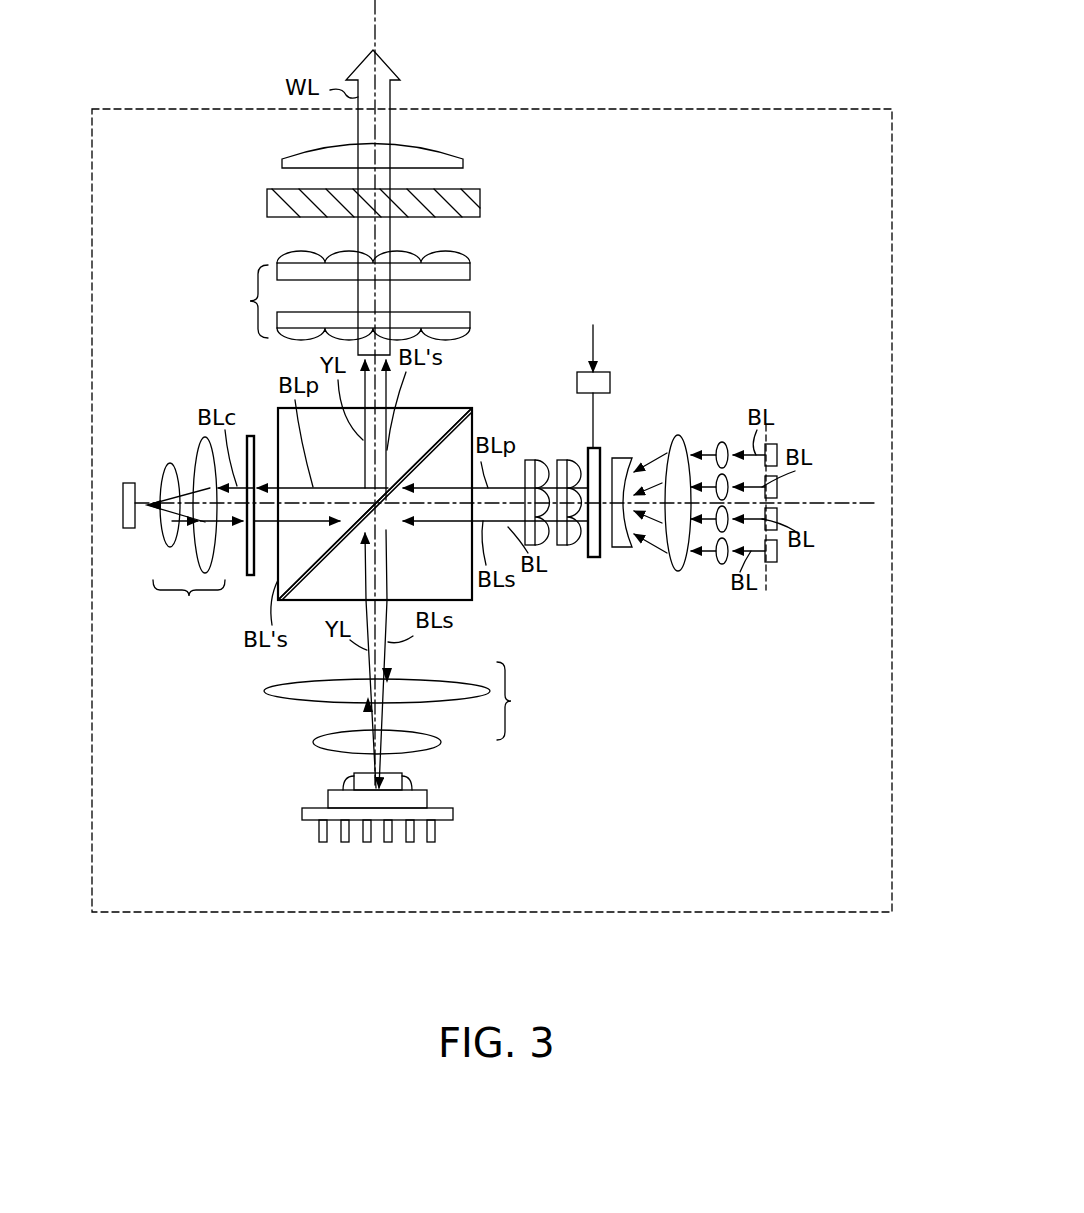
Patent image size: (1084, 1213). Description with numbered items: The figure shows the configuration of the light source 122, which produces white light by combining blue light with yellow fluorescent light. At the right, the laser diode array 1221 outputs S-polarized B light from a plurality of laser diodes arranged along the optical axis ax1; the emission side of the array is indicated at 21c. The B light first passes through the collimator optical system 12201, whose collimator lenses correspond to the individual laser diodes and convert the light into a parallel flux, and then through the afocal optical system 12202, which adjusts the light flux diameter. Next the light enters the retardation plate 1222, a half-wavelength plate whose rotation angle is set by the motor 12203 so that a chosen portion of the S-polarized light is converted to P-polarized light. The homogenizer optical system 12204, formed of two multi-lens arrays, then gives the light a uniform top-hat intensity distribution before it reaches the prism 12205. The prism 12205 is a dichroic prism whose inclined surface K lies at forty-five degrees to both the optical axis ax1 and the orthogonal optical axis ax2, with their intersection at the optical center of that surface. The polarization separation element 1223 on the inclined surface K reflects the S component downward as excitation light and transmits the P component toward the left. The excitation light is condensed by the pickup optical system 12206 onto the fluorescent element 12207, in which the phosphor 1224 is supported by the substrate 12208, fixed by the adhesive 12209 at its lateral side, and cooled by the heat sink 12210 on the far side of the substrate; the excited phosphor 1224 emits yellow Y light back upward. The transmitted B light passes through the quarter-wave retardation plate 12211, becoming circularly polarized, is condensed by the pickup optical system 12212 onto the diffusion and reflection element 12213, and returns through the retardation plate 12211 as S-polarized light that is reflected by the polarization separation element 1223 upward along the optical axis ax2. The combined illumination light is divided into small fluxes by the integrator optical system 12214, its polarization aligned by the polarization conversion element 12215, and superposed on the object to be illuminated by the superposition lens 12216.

The light source 122 is at (735, 109).
The laser diode (LD) array 1221 is at (772, 465).
The collimator optical system 12201 is at (735, 436).
The afocal optical system 12202 is at (614, 455).
The motor 12203 is at (577, 374).
The homogenizer optical system 12204 is at (535, 460).
The retardation plate 1222 is at (595, 558).
The polarization separation element 1223 is at (455, 412).
The inclined surface K is at (427, 447).
The prism 12205 is at (472, 600).
The pickup optical system 12206 is at (426, 708).
The fluorescent element 12207 is at (391, 797).
The phosphor 1224 is at (354, 778).
The substrate 12208 is at (328, 800).
The adhesive 12209 is at (412, 784).
The heat sink 12210 is at (302, 813).
The retardation plate 12211 is at (250, 436).
The pickup optical system 12212 is at (194, 529).
The diffusion and reflection element 12213 is at (128, 483).
The integrator optical system 12214 is at (321, 295).
The polarization conversion element 12215 is at (480, 201).
The superposition lens 12216 is at (463, 162).
The emission surface 21c is at (766, 590).
The optical axis ax1 is at (847, 503).
The optical axis ax2 is at (375, 29).